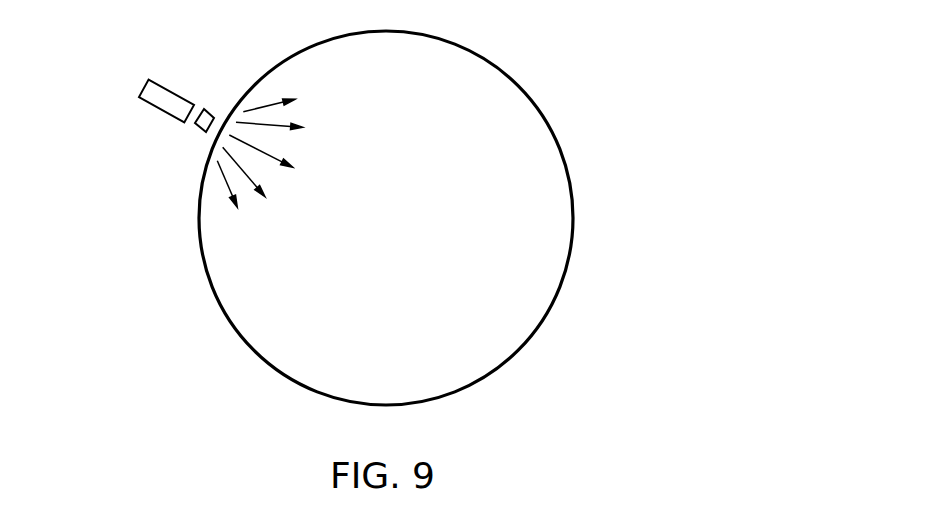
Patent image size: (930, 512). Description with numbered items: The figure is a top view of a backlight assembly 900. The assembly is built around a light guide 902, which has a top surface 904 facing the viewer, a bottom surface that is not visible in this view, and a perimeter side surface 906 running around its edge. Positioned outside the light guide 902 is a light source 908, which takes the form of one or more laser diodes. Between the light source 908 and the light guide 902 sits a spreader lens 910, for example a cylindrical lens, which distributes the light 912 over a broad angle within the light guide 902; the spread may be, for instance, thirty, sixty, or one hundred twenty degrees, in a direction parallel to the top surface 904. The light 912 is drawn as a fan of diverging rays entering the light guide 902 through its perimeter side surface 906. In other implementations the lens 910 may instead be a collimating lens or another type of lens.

The backlight assembly 900 is at (682, 65).
The light guide 902 is at (599, 168).
The top surface 904 is at (433, 67).
The perimeter side surface 906 is at (520, 80).
The light source 908 is at (147, 85).
The spreader lens 910 is at (212, 108).
The light 912 is at (224, 178).